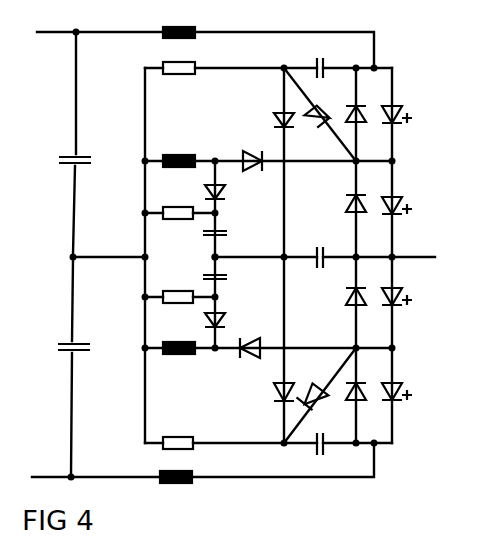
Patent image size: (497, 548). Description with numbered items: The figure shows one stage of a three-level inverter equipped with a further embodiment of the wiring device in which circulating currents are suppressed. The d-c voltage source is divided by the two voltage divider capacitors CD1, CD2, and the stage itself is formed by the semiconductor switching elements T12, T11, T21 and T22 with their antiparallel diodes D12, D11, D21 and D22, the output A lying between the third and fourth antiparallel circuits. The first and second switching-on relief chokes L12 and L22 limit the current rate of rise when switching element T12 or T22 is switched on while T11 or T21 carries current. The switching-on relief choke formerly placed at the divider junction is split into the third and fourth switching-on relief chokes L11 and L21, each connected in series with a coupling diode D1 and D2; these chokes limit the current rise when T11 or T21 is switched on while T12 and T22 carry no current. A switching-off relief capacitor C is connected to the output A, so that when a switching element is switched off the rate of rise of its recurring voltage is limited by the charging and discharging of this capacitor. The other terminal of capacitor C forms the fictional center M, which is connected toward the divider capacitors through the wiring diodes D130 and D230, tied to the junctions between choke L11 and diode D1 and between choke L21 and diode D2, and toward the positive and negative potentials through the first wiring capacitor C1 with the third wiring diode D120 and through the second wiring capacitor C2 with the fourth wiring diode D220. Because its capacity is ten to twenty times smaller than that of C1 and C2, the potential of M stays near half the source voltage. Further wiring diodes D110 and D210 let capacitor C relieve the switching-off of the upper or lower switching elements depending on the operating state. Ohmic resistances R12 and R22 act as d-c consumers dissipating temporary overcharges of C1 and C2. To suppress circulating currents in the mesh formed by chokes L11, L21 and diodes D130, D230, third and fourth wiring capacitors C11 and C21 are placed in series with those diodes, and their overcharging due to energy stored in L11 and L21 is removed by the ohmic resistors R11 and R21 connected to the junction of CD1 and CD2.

The first switching-on relief choke L12 is at (176, 30).
The ohmic resistance R12 is at (168, 76).
The voltage divider capacitor CD1 is at (85, 166).
The voltage divider capacitor CD2 is at (85, 353).
The third switching-on relief choke L11 is at (168, 156).
The fourth switching-on relief choke L21 is at (182, 336).
The second switching-on relief choke L22 is at (190, 475).
The ohmic resistor R11 is at (168, 194).
The ohmic resistor R21 is at (185, 294).
The ohmic resistance R22 is at (170, 424).
The first coupling diode D1 is at (255, 152).
The second coupling diode D2 is at (252, 362).
The third wiring diode D120 is at (280, 117).
The fourth wiring diode D220 is at (274, 394).
The first wiring diode D130 is at (226, 194).
The second wiring diode D230 is at (228, 316).
The upper wiring diode D110 is at (318, 106).
The lower wiring diode D210 is at (308, 387).
The antiparallel diode D12 is at (364, 117).
The antiparallel diode D11 is at (364, 209).
The antiparallel diode D21 is at (364, 301).
The antiparallel diode D22 is at (362, 390).
The semiconductor switching element T12 is at (399, 109).
The semiconductor switching element T11 is at (399, 201).
The semiconductor switching element T21 is at (399, 293).
The semiconductor switching element T22 is at (399, 384).
The first wiring capacitor C1 is at (324, 65).
The switching-off relief capacitor C is at (324, 257).
The second wiring capacitor C2 is at (323, 441).
The third wiring capacitor C11 is at (225, 231).
The fourth wiring capacitor C21 is at (230, 275).
The fictional center M is at (211, 257).
The output A is at (408, 257).